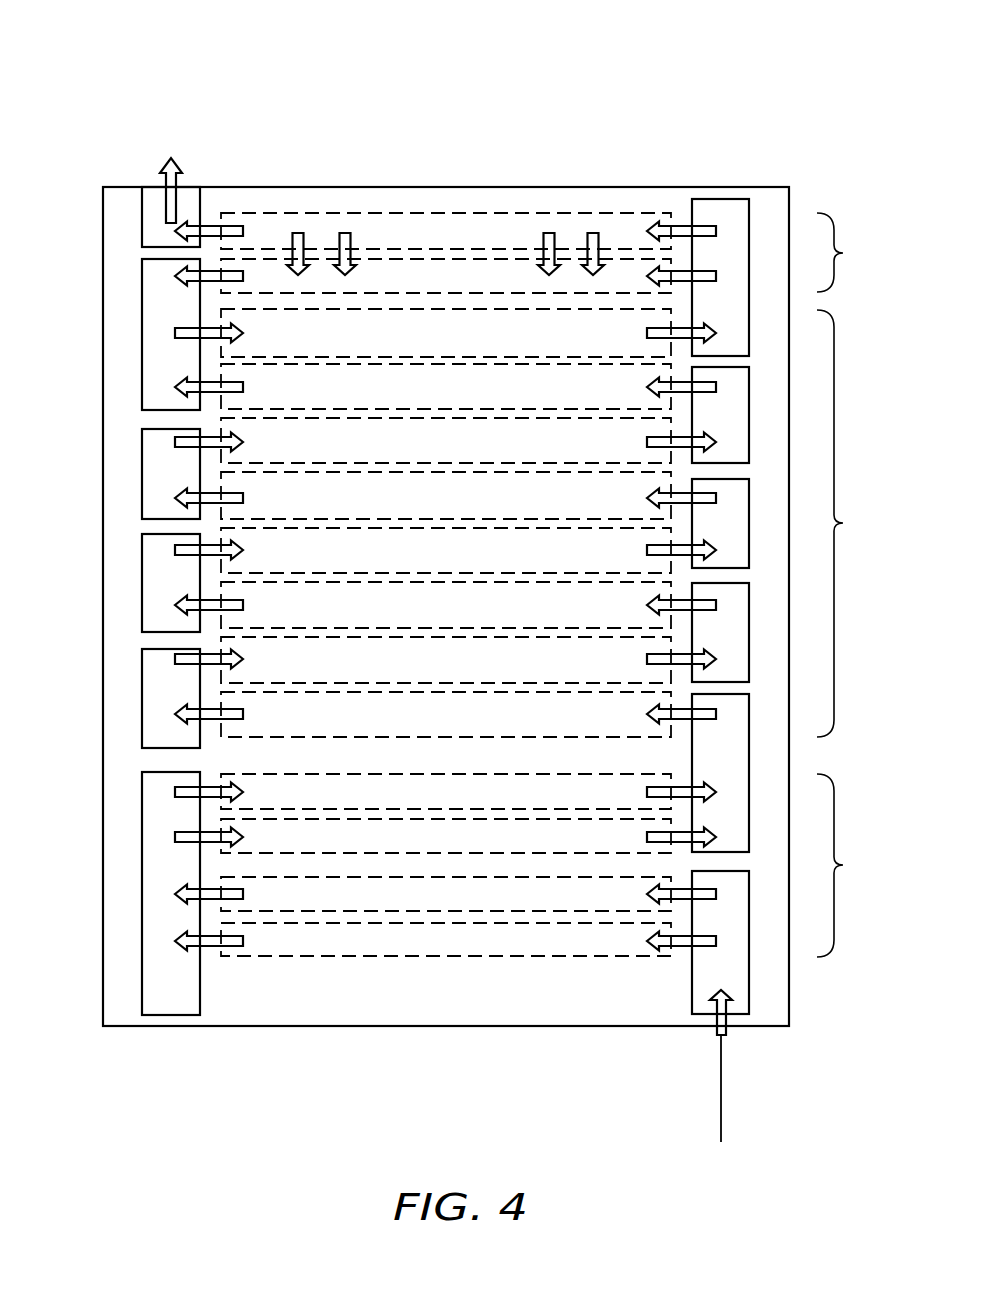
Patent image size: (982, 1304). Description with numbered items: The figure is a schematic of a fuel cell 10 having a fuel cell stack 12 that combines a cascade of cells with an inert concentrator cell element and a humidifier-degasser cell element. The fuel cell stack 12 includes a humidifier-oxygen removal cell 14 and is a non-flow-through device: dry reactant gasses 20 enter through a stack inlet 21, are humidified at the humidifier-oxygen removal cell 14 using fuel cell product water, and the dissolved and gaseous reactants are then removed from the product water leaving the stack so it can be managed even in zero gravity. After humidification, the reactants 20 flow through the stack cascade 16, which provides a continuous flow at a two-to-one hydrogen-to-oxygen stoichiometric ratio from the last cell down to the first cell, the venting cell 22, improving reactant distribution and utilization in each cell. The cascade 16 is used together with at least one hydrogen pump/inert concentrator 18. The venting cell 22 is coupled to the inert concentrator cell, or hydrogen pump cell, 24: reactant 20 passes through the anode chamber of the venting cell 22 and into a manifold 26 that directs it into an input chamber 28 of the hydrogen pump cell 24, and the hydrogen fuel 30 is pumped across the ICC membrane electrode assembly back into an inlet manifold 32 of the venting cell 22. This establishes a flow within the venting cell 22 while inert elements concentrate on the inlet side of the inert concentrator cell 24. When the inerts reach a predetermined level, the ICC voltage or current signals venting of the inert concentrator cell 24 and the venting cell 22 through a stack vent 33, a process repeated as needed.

The fuel cell 10 is at (262, 72).
The fuel cell stack 12 is at (608, 188).
The humidifier-oxygen removal cell 14 is at (849, 865).
The stack cascade 16 is at (849, 523).
The hydrogen pump/inert concentrator 18 is at (849, 252).
The dry reactant gasses 20 is at (722, 1120).
The stack inlet 21 is at (734, 1035).
The cell 1 (venting cell) 22 is at (232, 317).
The inert concentrator cell (hydrogen pump cell) 24 is at (321, 273).
The manifold 26 is at (738, 212).
The input chamber 28 is at (643, 220).
The hydrogen fuel 30 is at (549, 225).
The inlet manifold 32 is at (153, 368).
The stack vent 33 is at (148, 180).